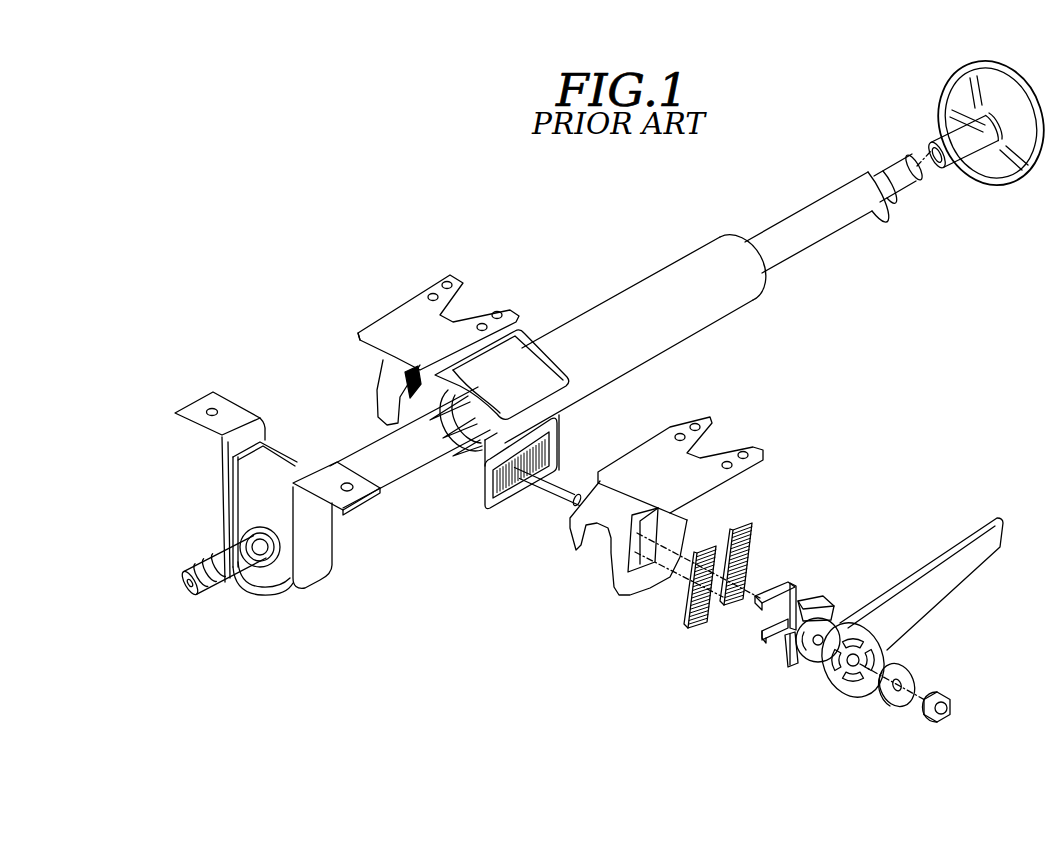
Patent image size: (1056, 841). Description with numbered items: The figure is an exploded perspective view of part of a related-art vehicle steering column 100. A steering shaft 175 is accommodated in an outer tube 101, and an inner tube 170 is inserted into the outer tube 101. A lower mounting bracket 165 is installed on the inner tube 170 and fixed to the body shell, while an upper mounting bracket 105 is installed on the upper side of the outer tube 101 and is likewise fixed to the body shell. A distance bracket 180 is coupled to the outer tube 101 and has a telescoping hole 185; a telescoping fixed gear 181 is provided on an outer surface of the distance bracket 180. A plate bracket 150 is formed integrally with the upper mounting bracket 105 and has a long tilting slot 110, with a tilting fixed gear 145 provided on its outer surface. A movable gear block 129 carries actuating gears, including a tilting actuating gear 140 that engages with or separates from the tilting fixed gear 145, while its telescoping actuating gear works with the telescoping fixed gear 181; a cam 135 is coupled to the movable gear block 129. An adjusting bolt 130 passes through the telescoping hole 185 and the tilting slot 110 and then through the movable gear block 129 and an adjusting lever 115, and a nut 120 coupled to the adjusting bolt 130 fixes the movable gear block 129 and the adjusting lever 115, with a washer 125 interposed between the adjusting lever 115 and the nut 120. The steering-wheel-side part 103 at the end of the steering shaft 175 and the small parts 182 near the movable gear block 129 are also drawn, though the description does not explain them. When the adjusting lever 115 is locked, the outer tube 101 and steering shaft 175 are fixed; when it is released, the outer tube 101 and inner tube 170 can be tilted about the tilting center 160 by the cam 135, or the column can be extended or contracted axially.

The steering column 100 is at (274, 182).
The outer tube 101 is at (680, 270).
The steering wheel 103 is at (1015, 180).
The upper mounting bracket 105 is at (390, 320).
The tilting slot 110 is at (640, 570).
The adjusting lever 115 is at (950, 567).
The nut 120 is at (954, 700).
The washer 125 is at (916, 677).
The movable gear block 129 is at (820, 598).
The adjusting bolt 130 is at (558, 503).
The cam 135 is at (803, 658).
The tilting actuating gear 140 is at (786, 660).
The tilting fixed gear 145 is at (733, 605).
The plate bracket 150 is at (665, 567).
The tilting center 160 is at (335, 515).
The lower mounting bracket 165 is at (227, 402).
The inner tube 170 is at (378, 500).
The steering shaft 175 is at (815, 205).
The distance bracket 180 is at (552, 497).
The telescoping fixed gear 181 is at (549, 470).
The support bracket 182 is at (787, 582).
The telescoping hole 185 is at (513, 500).